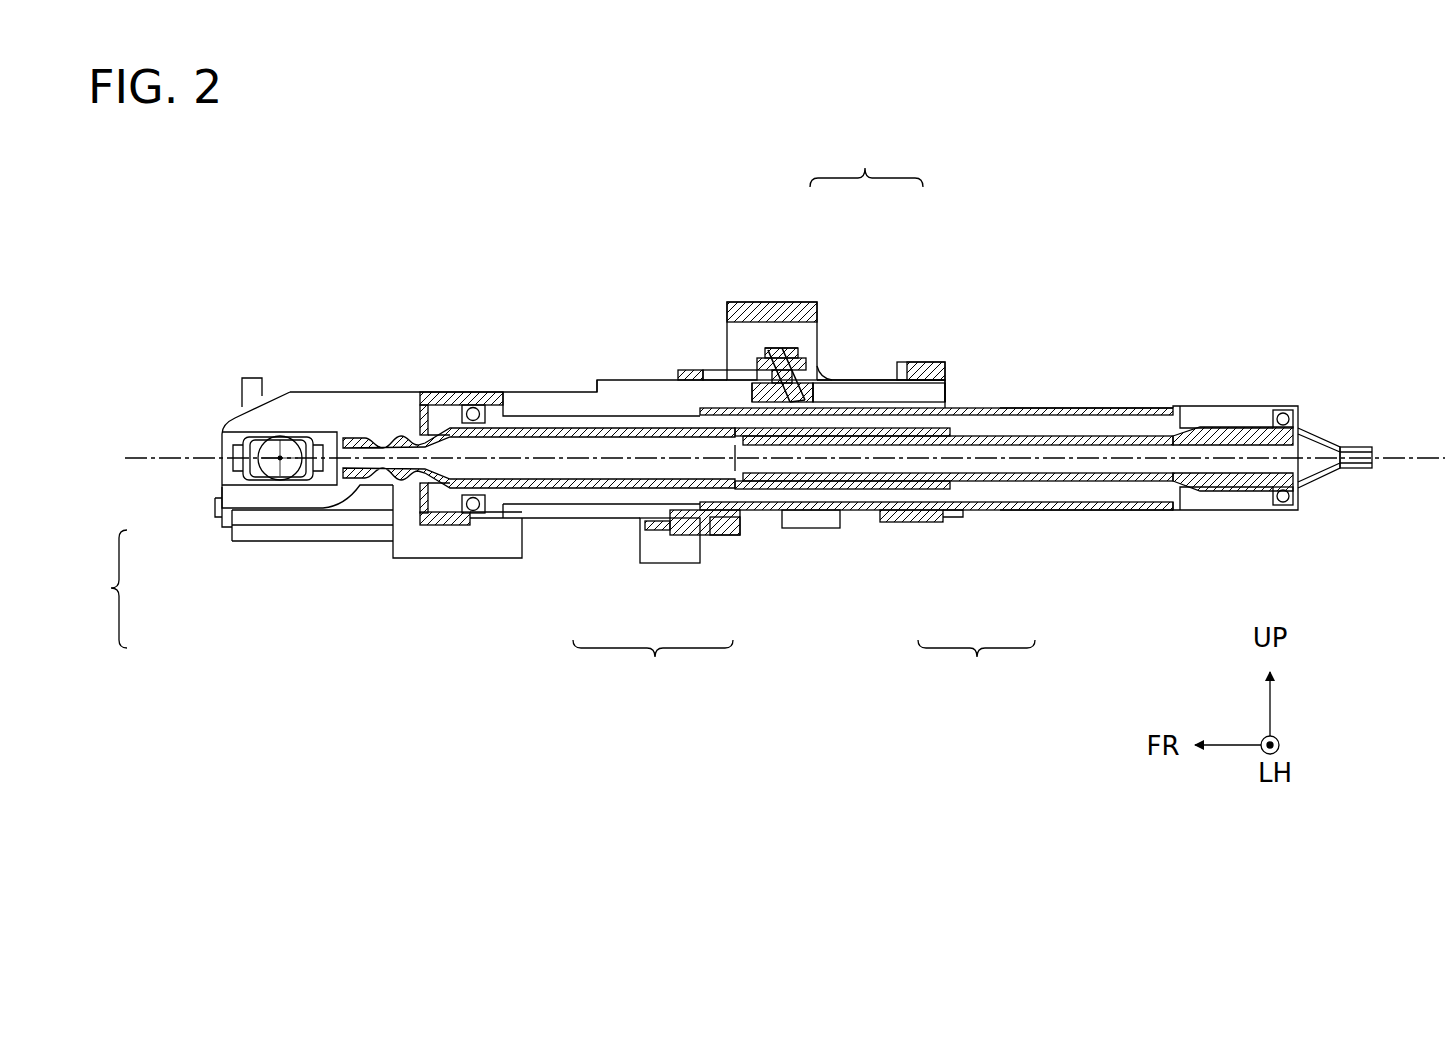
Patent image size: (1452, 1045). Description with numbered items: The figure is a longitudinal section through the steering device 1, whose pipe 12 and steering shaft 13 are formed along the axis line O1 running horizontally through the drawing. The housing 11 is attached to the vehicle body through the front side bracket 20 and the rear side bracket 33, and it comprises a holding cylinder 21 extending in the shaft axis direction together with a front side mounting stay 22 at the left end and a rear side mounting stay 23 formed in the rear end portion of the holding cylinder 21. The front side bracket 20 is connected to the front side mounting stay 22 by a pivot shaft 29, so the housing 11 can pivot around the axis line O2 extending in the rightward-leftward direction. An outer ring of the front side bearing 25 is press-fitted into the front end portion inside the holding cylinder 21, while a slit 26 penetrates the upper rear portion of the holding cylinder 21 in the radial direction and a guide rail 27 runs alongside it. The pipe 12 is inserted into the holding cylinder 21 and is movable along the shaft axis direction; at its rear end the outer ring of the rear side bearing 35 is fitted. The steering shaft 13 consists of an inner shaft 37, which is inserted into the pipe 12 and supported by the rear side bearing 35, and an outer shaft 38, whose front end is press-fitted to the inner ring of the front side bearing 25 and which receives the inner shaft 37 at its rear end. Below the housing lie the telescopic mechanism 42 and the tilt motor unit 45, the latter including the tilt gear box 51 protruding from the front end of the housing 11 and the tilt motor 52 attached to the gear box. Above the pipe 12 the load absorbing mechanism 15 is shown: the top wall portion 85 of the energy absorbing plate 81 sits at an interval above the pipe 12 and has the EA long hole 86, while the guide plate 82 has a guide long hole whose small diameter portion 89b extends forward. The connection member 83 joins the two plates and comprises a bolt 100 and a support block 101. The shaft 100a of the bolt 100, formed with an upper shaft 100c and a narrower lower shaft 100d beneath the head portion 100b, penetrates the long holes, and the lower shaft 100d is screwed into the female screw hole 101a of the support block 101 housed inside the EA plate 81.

The steering device 1 is at (262, 291).
The housing 11 is at (377, 384).
The pipe 12 is at (1131, 521).
The steering shaft 13 is at (976, 668).
The load absorbing mechanism 15 is at (932, 378).
The front side bracket 20 is at (252, 377).
The holding cylinder 21 is at (765, 519).
The front side mounting stay 22 is at (312, 391).
The rear side mounting stay 23 is at (905, 367).
The front side bearing 25 is at (478, 509).
The slit 26 is at (577, 407).
The guide rail 27 is at (643, 378).
The pivot shaft 29 is at (265, 473).
The rear side bracket 33 is at (753, 302).
The rear side bearing 35 is at (1281, 506).
The inner shaft 37 is at (1023, 482).
The outer shaft 38 is at (922, 490).
The telescopic mechanism 42 is at (388, 554).
The tilt motor unit 45 is at (103, 589).
The tilt gear box 51 is at (400, 518).
The tilt motor 52 is at (232, 535).
The energy absorbing plate 81 is at (952, 391).
The guide plate 82 is at (676, 372).
The connection member 83 is at (866, 157).
The top wall portion 85 is at (952, 378).
The EA long hole 86 is at (881, 372).
The small diameter portion 89b is at (712, 377).
The bolt 100 is at (790, 370).
The shaft 100a is at (653, 668).
The head portion 100b is at (780, 349).
The upper shaft 100c is at (767, 376).
The lower shaft 100d is at (773, 394).
The support block 101 is at (812, 381).
The female screw hole 101a is at (786, 404).
The axis line O1 is at (1429, 446).
The axis line O2 is at (279, 456).